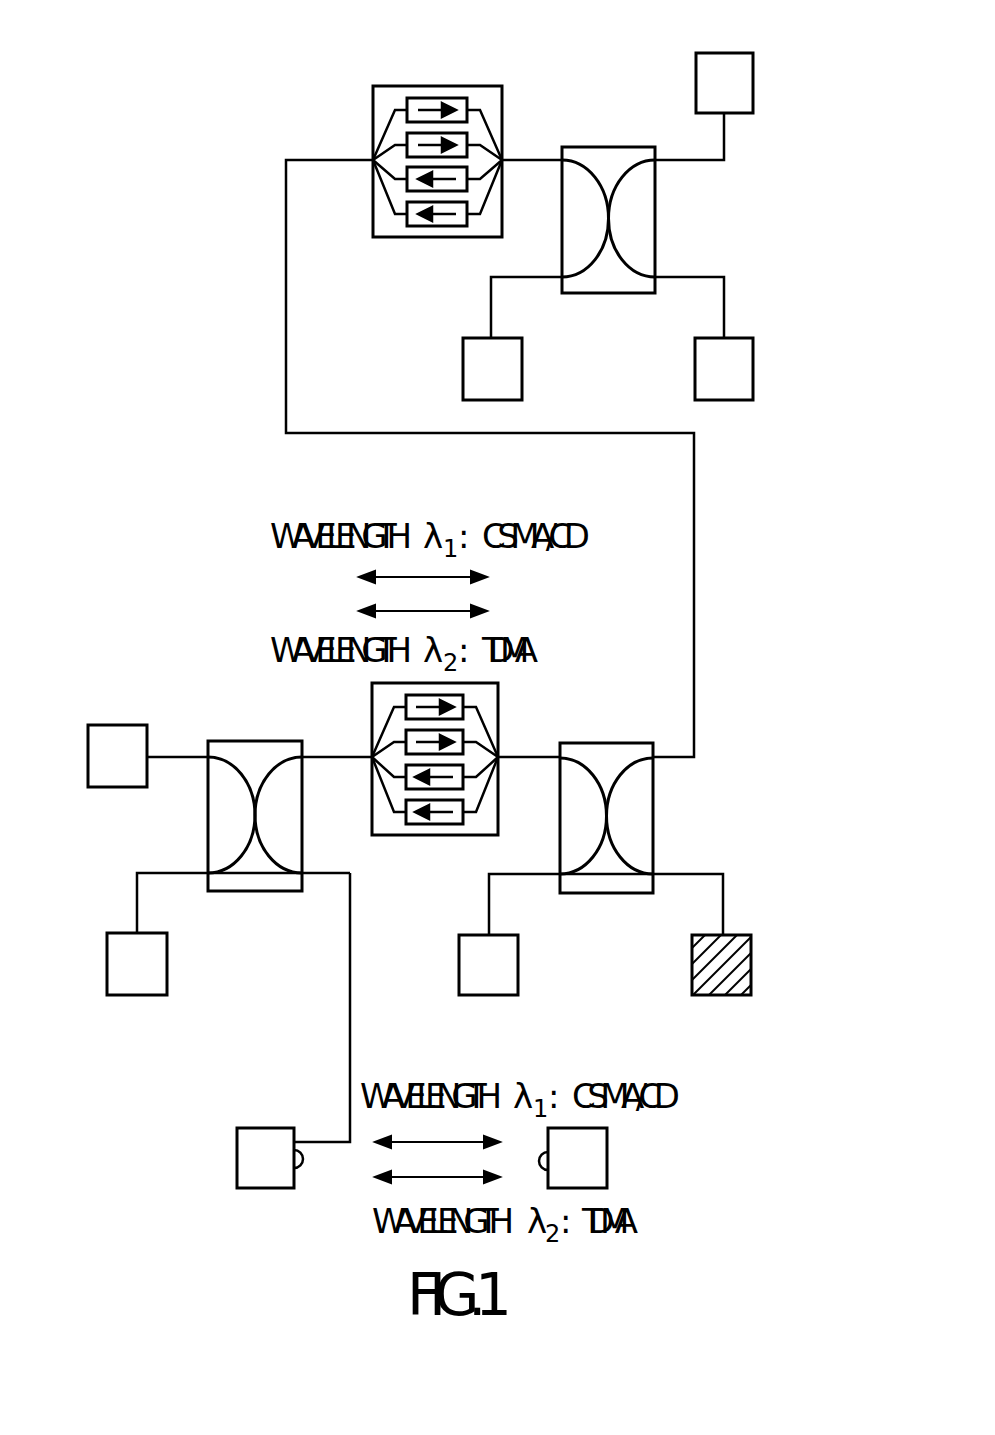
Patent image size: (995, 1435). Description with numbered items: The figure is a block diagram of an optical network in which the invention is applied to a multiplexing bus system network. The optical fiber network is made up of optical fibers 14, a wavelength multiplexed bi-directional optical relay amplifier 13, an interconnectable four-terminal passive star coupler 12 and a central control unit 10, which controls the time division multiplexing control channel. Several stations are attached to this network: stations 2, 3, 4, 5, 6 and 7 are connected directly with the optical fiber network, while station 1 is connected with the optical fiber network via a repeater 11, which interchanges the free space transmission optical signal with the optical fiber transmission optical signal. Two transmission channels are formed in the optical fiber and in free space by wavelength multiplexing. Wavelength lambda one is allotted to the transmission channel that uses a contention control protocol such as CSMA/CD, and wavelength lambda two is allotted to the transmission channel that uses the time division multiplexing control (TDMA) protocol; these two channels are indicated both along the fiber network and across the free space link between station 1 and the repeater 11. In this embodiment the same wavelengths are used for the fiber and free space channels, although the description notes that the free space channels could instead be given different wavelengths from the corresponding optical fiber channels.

The station 1 is at (583, 1165).
The station 2 is at (140, 975).
The station 3 is at (502, 972).
The station 4 is at (119, 753).
The station 5 is at (707, 85).
The station 6 is at (717, 372).
The station 7 is at (483, 367).
The central control unit 10 is at (737, 975).
The repeater 11 is at (263, 1167).
The interconnectable 4-terminal passive star coupler 12 is at (655, 223).
The wavelength multiplexed bi-directional optical relay amplifier 13 is at (483, 95).
The optical fibers 14 is at (177, 757).